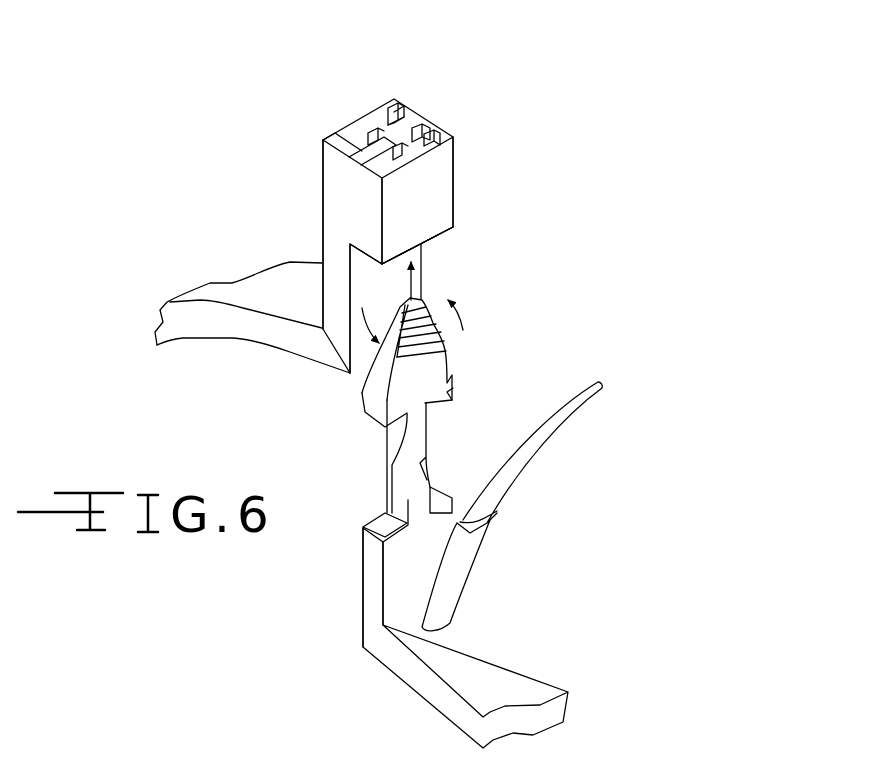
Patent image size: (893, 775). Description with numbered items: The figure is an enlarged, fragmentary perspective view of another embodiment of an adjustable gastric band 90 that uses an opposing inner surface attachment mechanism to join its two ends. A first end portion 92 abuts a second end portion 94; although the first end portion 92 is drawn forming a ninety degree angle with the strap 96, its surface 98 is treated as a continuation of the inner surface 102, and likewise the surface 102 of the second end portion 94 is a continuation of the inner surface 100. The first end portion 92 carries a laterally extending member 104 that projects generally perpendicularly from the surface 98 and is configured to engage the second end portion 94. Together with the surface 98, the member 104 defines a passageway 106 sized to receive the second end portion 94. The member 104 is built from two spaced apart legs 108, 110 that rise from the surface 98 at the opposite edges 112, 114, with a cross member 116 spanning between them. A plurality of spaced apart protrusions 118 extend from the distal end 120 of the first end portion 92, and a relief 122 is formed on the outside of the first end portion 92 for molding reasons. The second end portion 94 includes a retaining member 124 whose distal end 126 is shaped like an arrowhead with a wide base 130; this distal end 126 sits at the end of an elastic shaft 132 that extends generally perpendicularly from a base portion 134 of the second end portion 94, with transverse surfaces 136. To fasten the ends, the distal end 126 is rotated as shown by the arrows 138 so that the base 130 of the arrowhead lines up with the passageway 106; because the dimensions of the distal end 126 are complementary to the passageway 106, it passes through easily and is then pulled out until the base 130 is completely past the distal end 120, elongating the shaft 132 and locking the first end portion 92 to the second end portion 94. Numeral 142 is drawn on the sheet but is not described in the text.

The adjustable gastric band 90 is at (243, 389).
The first end portion 92 is at (470, 178).
The second end portion 94 is at (518, 411).
The strap 96 is at (240, 331).
The surface 98 is at (349, 270).
The inner surface 100 is at (300, 354).
The inner surface 102 is at (360, 603).
The laterally extending member 104 is at (455, 205).
The passageway 106 is at (408, 130).
The leg 108 is at (360, 158).
The leg 110 is at (430, 118).
The edge 112 is at (326, 203).
The edge 114 is at (411, 125).
The cross member 116 is at (431, 217).
The protrusions 118 is at (373, 128).
The distal end 120 is at (423, 277).
The relief 122 is at (360, 147).
The retaining member 124 is at (393, 437).
The distal end 126 is at (450, 373).
The base 130 is at (450, 398).
The elastic shaft 132 is at (430, 438).
The base portion 134 is at (393, 568).
The transverse surfaces 136 is at (437, 492).
The arrows 138 is at (460, 334).
The lower edge 142 is at (442, 236).